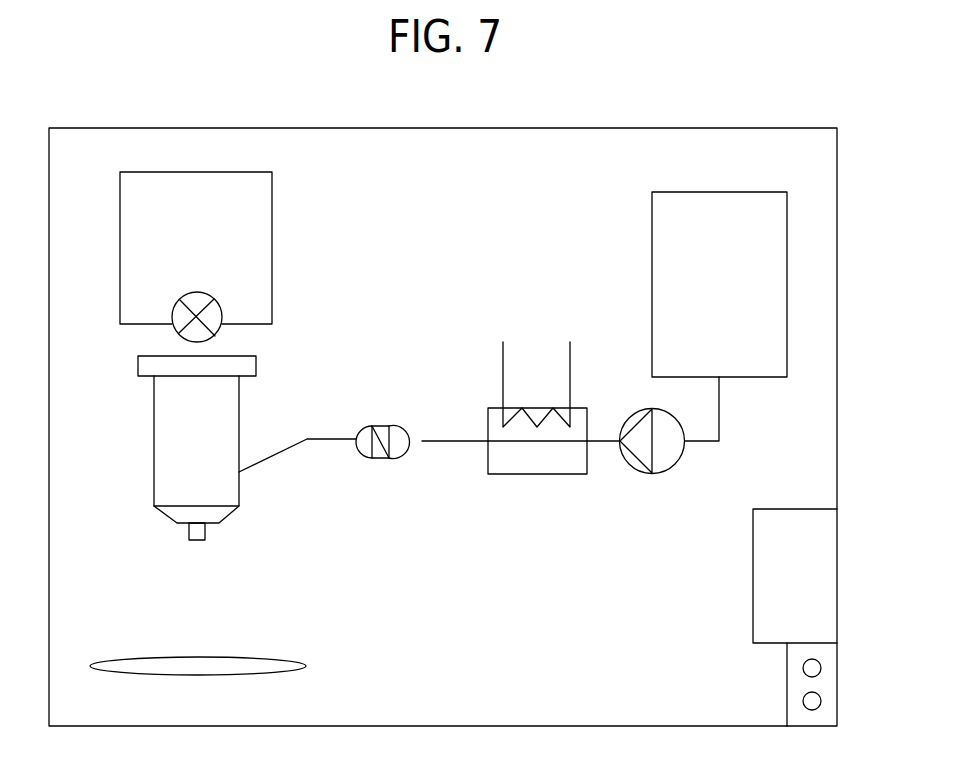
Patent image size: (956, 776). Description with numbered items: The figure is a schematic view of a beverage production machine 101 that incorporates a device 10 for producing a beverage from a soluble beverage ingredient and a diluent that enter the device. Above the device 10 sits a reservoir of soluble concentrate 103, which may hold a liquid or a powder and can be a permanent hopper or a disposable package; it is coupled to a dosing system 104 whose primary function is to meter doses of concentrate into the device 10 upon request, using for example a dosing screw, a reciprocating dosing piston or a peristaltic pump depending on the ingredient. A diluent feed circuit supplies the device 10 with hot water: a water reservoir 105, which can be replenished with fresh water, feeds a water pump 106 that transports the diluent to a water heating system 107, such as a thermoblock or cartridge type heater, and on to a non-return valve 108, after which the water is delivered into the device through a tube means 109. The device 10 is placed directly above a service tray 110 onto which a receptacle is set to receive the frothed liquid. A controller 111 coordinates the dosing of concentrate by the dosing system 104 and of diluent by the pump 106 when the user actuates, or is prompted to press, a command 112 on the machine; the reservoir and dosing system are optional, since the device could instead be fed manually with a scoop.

The device 10 is at (154, 438).
The beverage production machine 101 is at (779, 128).
The reservoir of soluble concentrate 103 is at (272, 190).
The dosing system 104 is at (197, 292).
The water reservoir 105 is at (652, 207).
The water pump 106 is at (652, 475).
The water heating system 107 is at (535, 476).
The non-return valve 108 is at (381, 426).
The tube means 109 is at (263, 463).
The service tray 110 is at (307, 665).
The controller 111 is at (753, 560).
The command 112 is at (787, 685).